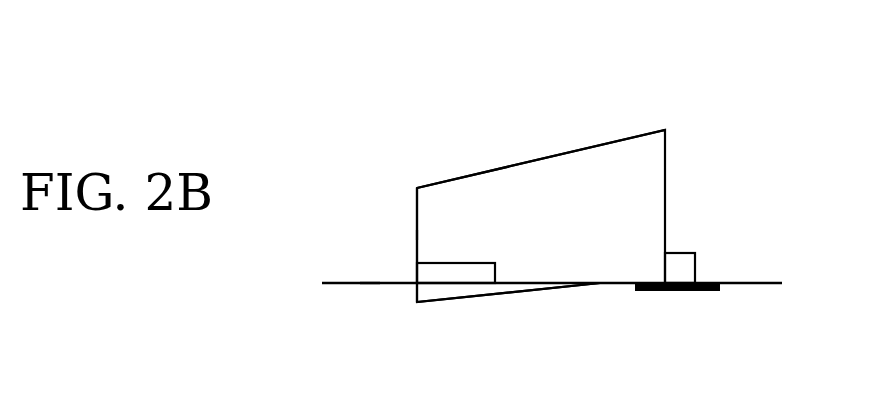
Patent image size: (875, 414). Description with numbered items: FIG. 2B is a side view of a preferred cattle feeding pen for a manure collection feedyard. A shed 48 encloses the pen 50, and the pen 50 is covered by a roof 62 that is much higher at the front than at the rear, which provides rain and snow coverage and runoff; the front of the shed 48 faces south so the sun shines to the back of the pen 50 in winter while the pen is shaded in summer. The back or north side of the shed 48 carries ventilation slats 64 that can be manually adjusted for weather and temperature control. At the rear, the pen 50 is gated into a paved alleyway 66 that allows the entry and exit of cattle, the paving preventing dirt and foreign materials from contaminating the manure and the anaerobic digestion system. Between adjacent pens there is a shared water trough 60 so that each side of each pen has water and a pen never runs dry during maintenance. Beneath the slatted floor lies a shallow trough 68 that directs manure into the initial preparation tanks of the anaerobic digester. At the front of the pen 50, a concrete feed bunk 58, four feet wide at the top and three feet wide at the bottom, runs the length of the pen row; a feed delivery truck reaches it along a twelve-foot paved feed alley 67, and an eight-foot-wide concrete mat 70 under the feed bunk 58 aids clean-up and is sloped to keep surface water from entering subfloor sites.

The shed 48 is at (676, 114).
The pen 50 is at (440, 193).
The roof 62 is at (522, 160).
The ventilation slats 64 is at (417, 235).
The paved feed alley 67 is at (745, 282).
The paved alleyway 66 is at (371, 286).
The water trough 60 is at (445, 273).
The shallow trough 68 is at (480, 290).
The feed bunk 58 is at (680, 250).
The concrete mat 70 is at (693, 290).